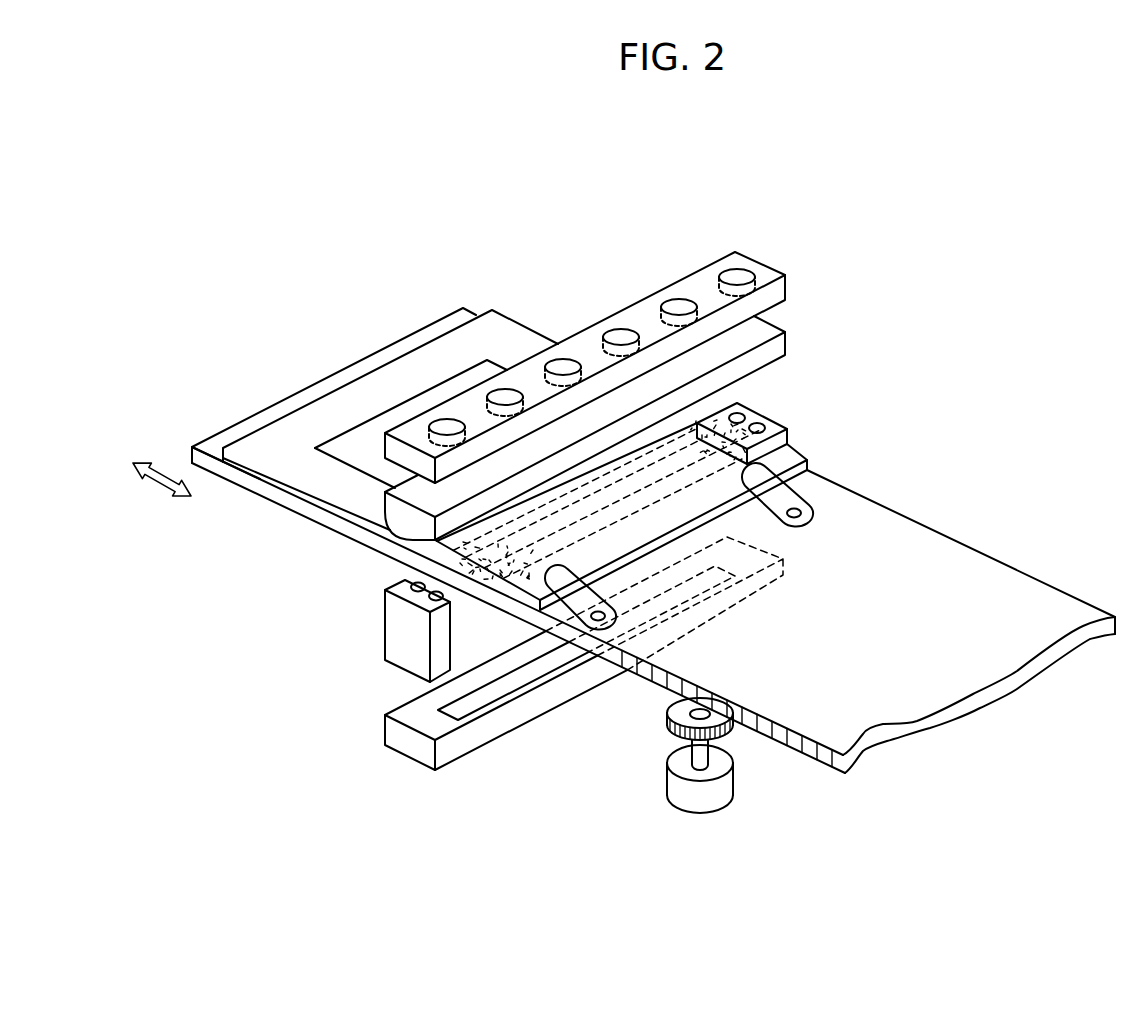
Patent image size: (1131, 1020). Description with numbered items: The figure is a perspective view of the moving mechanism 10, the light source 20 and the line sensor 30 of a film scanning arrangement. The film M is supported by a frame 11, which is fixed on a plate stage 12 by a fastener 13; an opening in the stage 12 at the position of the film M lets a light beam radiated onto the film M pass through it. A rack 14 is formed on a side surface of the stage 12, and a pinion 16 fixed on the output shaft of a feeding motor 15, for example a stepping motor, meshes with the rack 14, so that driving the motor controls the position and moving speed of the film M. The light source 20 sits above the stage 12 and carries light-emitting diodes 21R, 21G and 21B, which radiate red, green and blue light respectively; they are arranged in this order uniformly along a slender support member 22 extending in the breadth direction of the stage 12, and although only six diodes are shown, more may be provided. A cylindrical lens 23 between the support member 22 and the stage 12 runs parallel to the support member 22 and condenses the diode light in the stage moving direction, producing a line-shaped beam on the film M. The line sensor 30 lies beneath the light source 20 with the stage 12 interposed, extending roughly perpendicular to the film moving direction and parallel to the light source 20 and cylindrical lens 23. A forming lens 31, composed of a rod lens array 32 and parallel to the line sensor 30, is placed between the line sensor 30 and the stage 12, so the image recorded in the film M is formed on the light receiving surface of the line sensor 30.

The moving mechanism 10 is at (654, 816).
The frame 11 is at (292, 427).
The film M is at (402, 413).
The light source 20 is at (484, 375).
The light-emitting diode 21B is at (614, 330).
The light-emitting diode 21G is at (675, 300).
The light-emitting diode 21R is at (733, 270).
The support member 22 is at (766, 270).
The cylindrical lens 23 is at (767, 330).
The plate stage 12 is at (933, 557).
The fastener 13 is at (790, 492).
The rack 14 is at (815, 760).
The feeding motor 15 is at (700, 808).
The pinion 16 is at (680, 714).
The line sensor 30 is at (410, 748).
The forming lens 31 is at (776, 421).
The rod lens array 32 is at (404, 578).